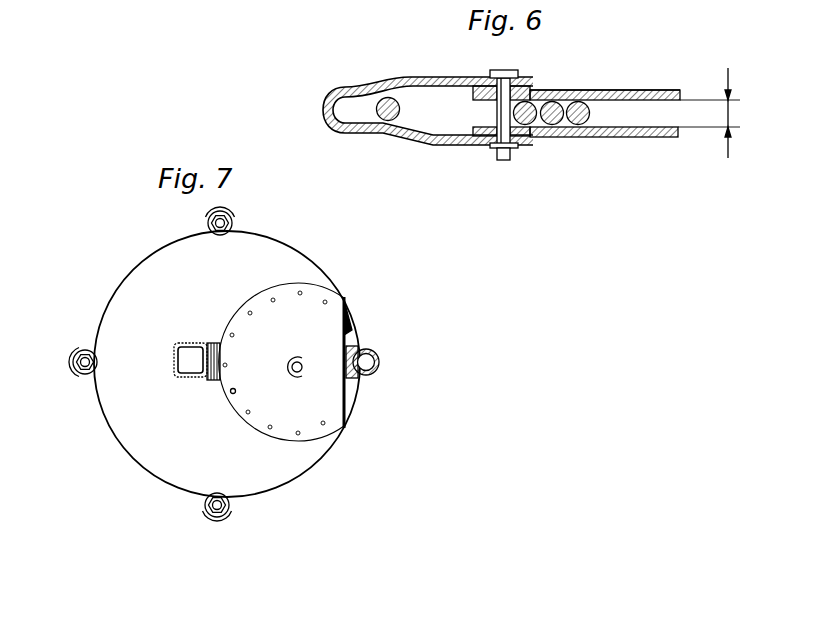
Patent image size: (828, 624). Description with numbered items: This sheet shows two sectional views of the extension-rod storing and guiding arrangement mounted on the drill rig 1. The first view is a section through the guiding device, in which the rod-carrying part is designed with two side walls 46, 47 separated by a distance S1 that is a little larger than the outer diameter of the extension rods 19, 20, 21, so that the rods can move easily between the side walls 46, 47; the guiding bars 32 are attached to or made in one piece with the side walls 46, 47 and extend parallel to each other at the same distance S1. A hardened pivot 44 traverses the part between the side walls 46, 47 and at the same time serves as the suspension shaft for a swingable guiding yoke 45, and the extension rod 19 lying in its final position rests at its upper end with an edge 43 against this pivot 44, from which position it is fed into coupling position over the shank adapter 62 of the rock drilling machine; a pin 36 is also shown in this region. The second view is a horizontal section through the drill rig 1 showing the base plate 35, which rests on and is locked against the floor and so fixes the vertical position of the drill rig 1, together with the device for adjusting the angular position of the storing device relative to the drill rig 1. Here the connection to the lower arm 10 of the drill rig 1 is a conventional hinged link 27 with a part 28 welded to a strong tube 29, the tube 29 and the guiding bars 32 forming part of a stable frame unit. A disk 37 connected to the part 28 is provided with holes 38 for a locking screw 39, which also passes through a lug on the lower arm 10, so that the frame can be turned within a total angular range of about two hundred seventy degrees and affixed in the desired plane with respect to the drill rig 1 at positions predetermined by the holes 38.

In FIG. 7, the drill rig 1 is at (178, 350).
In FIG. 7, the lower arm 10 is at (216, 343).
In FIG. 6, the extension rod 19 is at (533, 137).
In FIG. 6, the extension rod 20 is at (557, 123).
In FIG. 6, the extension rod 21 is at (581, 123).
In FIG. 7, the link 27 is at (303, 369).
In FIG. 7, the part 28 is at (355, 380).
In FIG. 7, the tube 29 is at (379, 362).
In FIG. 6, the guiding bars 32 is at (622, 90).
In FIG. 7, the base plate 35 is at (150, 268).
In FIG. 7, the pin 36 is at (86, 372).
In FIG. 7, the disk 37 is at (330, 325).
In FIG. 7, the holes 38 is at (303, 292).
In FIG. 7, the locking screw 39 is at (234, 394).
In FIG. 6, the edge 43 is at (529, 86).
In FIG. 6, the pivot 44 is at (497, 70).
In FIG. 6, the guiding yoke 45 is at (325, 101).
In FIG. 6, the side wall 46 is at (487, 136).
In FIG. 6, the side wall 47 is at (562, 90).
In FIG. 6, the shank adapter 62 is at (384, 121).
In FIG. 6, the distance S1 is at (709, 113).